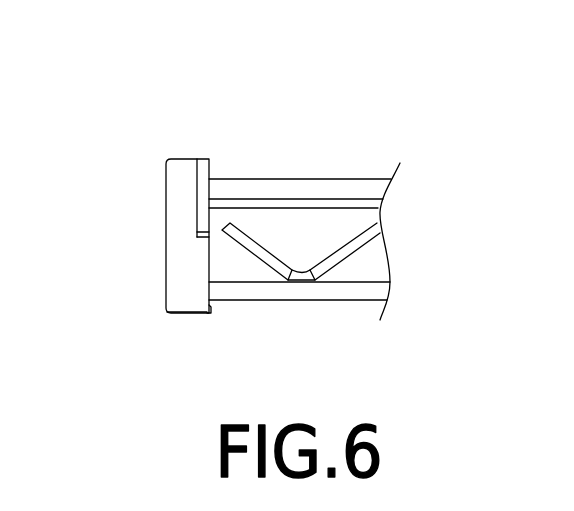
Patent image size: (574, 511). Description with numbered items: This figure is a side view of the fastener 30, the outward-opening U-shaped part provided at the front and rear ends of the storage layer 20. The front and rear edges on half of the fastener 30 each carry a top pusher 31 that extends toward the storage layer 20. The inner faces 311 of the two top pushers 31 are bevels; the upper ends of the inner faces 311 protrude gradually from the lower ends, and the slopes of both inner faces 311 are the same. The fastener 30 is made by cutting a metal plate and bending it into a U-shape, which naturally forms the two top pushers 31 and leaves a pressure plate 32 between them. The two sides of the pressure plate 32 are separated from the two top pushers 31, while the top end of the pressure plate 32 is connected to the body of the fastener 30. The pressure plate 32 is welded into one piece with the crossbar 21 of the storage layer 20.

The storage layer 20 is at (340, 187).
The crossbar 21 is at (363, 292).
The fastener 30 is at (178, 185).
The top pusher 31 is at (197, 302).
The inner face 311 is at (208, 293).
The pressure plate 32 is at (209, 308).